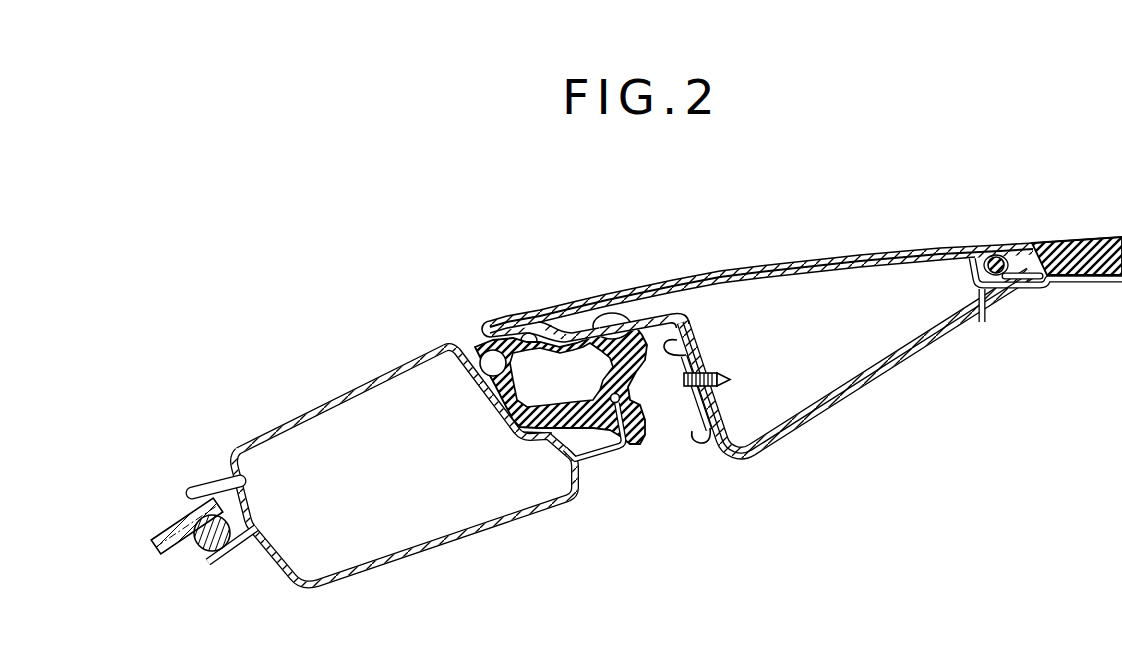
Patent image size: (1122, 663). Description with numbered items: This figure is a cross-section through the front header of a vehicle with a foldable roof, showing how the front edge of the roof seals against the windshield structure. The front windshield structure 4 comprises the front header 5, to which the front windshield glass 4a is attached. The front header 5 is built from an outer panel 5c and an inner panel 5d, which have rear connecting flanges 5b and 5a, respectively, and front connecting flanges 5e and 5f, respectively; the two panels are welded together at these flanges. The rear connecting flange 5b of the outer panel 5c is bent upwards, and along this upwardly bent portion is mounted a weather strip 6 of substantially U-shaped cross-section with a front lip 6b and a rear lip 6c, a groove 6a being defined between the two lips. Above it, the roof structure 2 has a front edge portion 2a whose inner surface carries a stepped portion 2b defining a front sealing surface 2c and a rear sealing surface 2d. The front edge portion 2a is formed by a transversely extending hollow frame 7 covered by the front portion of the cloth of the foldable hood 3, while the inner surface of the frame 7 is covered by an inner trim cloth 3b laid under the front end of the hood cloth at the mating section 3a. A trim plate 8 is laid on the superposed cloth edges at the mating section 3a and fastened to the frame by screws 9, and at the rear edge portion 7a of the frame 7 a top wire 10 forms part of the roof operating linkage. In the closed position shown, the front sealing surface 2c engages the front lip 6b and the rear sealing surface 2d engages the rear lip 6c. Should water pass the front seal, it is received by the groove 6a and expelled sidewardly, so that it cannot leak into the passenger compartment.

The roof structure 2 is at (800, 255).
The front edge portion 2a is at (508, 314).
The stepped portion 2b is at (568, 318).
The front sealing surface 2c is at (531, 330).
The rear sealing surface 2d is at (665, 315).
The foldable hood 3 is at (902, 331).
The mating section 3a is at (719, 400).
The inner trim cloth 3b is at (888, 371).
The front windshield structure 4 is at (156, 509).
The front windshield glass 4a is at (155, 540).
The front header 5 is at (404, 467).
The rear connecting flange 5a is at (583, 472).
The rear connecting flange 5b is at (637, 437).
The outer panel 5c is at (375, 385).
The inner panel 5d is at (450, 547).
The front connecting flange 5e is at (200, 556).
The front connecting flange 5f is at (244, 562).
The weather strip 6 is at (541, 398).
The groove 6a is at (548, 431).
The front lip 6b is at (500, 398).
The rear lip 6c is at (594, 383).
The hollow frame 7 is at (861, 363).
The rear edge portion 7a is at (1003, 290).
The trim plate 8 is at (691, 434).
The screws 9 is at (718, 371).
The top wire 10 is at (999, 256).